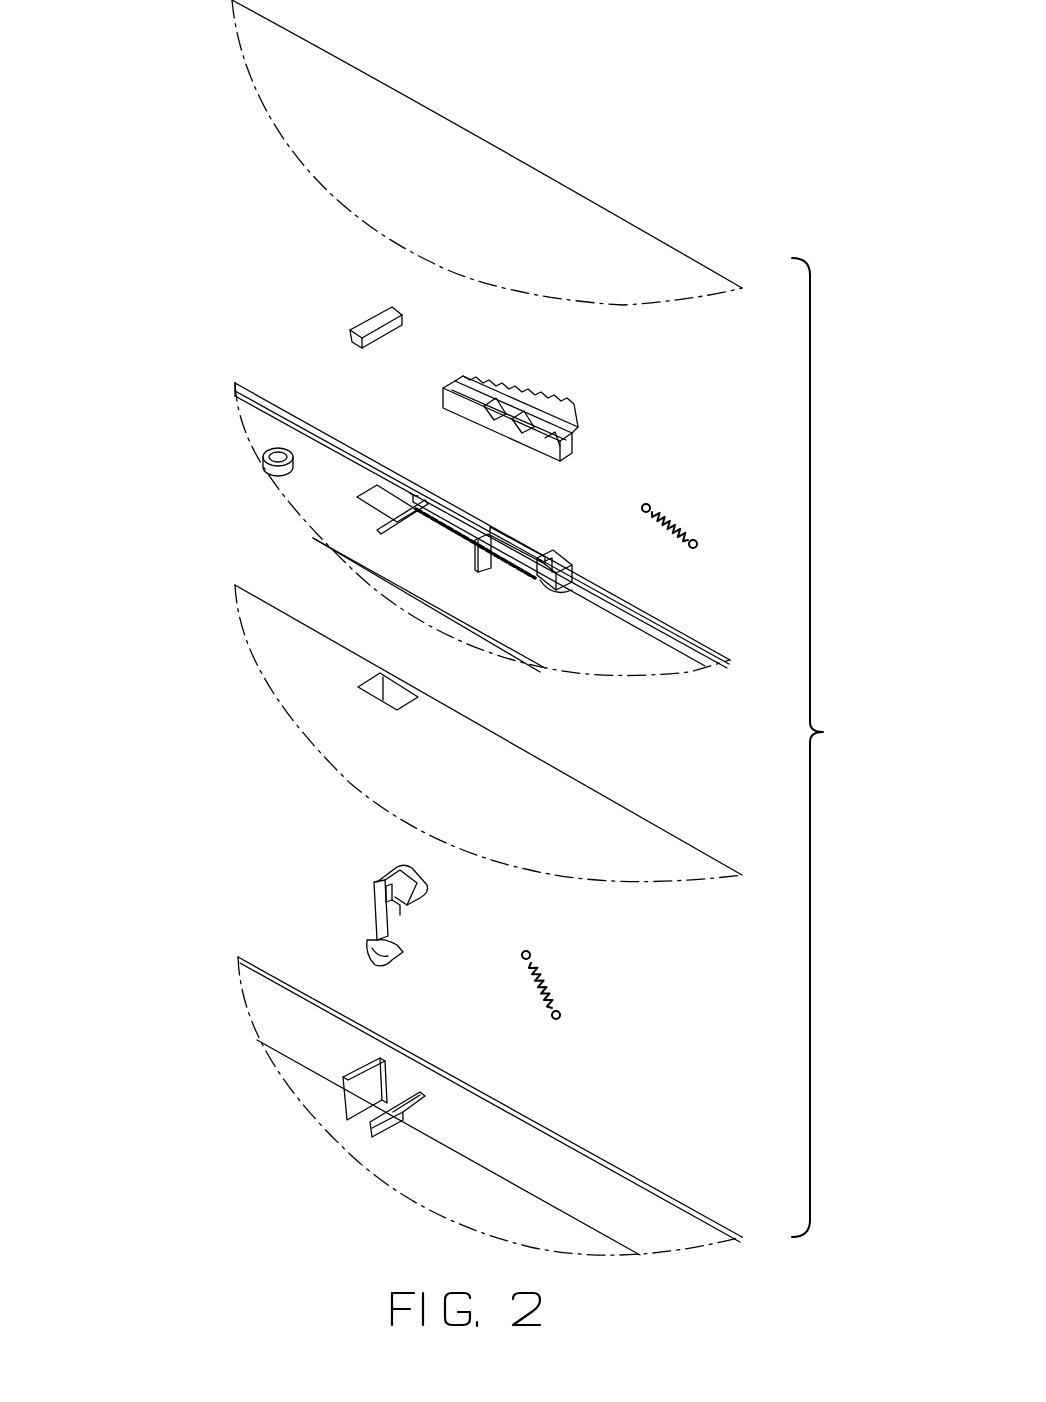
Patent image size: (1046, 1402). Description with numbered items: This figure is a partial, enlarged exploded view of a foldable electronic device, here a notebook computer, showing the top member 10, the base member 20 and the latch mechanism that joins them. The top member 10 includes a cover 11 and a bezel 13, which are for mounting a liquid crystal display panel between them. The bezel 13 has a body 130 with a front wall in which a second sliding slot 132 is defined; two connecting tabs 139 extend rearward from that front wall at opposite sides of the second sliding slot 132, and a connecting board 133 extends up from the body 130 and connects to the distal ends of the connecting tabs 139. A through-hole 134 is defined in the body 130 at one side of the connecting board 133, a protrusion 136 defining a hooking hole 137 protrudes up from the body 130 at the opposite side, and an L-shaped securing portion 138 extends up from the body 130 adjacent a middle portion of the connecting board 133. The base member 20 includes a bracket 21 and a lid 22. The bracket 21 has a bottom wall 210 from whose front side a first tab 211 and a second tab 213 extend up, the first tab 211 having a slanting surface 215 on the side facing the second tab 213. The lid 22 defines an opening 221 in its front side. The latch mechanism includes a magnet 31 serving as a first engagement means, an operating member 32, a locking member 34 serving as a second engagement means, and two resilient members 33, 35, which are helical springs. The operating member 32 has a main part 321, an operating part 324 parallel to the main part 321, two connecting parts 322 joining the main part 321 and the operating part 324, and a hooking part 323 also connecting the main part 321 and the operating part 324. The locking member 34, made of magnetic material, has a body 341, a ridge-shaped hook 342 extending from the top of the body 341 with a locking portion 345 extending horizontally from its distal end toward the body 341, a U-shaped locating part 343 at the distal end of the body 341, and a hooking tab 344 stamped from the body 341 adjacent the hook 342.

The top member 10 is at (138, 143).
The cover 11 is at (293, 95).
The bezel 13 is at (252, 425).
The body 130 is at (633, 656).
The second sliding slot 132 is at (448, 507).
The connecting board 133 is at (527, 552).
The through-hole 134 is at (385, 500).
The protrusion 136 is at (567, 567).
The hooking hole 137 is at (565, 590).
The L-shaped securing portion 138 is at (493, 528).
The connecting tabs 139 is at (415, 497).
The base member 20 is at (110, 708).
The bracket 21 is at (245, 955).
The bottom wall 210 is at (472, 1193).
The first tab 211 is at (417, 1118).
The second tab 213 is at (400, 1056).
The slanting surface 215 is at (390, 1110).
The lid 22 is at (263, 658).
The opening 221 is at (403, 698).
The magnet 31 is at (375, 322).
The operating member 32 is at (508, 382).
The main part 321 is at (452, 402).
The connecting parts 322 is at (488, 400).
The hooking part 323 is at (545, 440).
The operating part 324 is at (553, 418).
The resilient member 33 is at (682, 524).
The locking member 34 is at (399, 911).
The body 341 is at (390, 922).
The hook 342 is at (417, 883).
The U-shaped locating part 343 is at (388, 953).
The hooking tab 344 is at (380, 893).
The locking portion 345 is at (400, 907).
The resilient member 35 is at (548, 972).